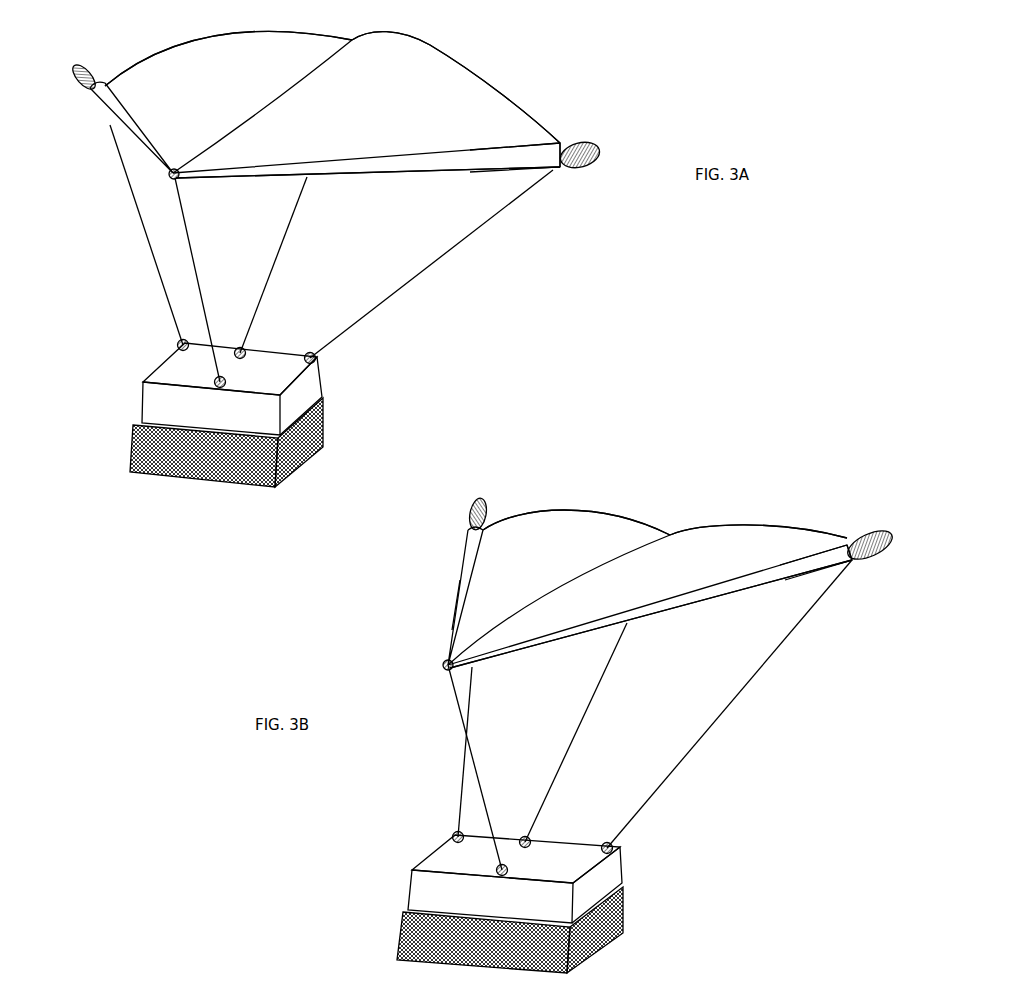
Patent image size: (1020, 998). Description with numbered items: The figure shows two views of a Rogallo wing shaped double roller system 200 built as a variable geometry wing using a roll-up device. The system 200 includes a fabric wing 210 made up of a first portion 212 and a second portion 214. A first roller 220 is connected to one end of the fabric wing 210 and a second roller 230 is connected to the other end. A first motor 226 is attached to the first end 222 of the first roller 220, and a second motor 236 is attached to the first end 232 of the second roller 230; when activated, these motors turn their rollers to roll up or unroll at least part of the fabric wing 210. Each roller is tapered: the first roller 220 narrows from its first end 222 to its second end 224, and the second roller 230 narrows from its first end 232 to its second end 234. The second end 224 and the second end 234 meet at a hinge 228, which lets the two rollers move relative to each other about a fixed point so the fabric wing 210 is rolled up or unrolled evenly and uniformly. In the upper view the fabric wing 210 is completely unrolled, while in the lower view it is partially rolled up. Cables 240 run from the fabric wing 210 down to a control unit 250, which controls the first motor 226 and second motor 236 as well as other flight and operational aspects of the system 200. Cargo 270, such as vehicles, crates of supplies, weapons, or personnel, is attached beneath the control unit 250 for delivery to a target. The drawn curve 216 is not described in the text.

In FIG. 3B, the Rogallo wing shaped double roller system 200 is at (608, 450).
In FIG. 3A, the fabric wing 210 is at (455, 42).
In FIG. 3B, the fabric wing 210 is at (735, 515).
In FIG. 3A, the first portion 212 is at (482, 85).
In FIG. 3B, the first portion 212 is at (775, 547).
In FIG. 3A, the second portion 214 is at (230, 43).
In FIG. 3B, the second portion 214 is at (565, 522).
In FIG. 3A, the canopy rib 216 is at (262, 106).
In FIG. 3B, the canopy rib 216 is at (559, 600).
In FIG. 3A, the first roller 220 is at (373, 170).
In FIG. 3B, the first roller 220 is at (673, 607).
In FIG. 3A, the first end 222 is at (550, 170).
In FIG. 3B, the first end 222 is at (837, 558).
In FIG. 3A, the second end 224 is at (200, 178).
In FIG. 3B, the second end 224 is at (490, 658).
In FIG. 3A, the first motor 226 is at (585, 148).
In FIG. 3B, the first motor 226 is at (875, 557).
In FIG. 3B, the hinge 228 is at (442, 664).
In FIG. 3A, the second roller 230 is at (125, 123).
In FIG. 3B, the second roller 230 is at (468, 567).
In FIG. 3A, the first end 232 is at (97, 100).
In FIG. 3B, the first end 232 is at (467, 537).
In FIG. 3A, the second end 234 is at (170, 172).
In FIG. 3B, the second end 234 is at (452, 626).
In FIG. 3A, the second motor 236 is at (82, 68).
In FIG. 3B, the second motor 236 is at (475, 500).
In FIG. 3A, the cables 240 is at (150, 248).
In FIG. 3B, the cables 240 is at (462, 784).
In FIG. 3A, the control unit 250 is at (152, 394).
In FIG. 3B, the control unit 250 is at (415, 886).
In FIG. 3A, the cargo 270 is at (138, 443).
In FIG. 3B, the cargo 270 is at (402, 937).